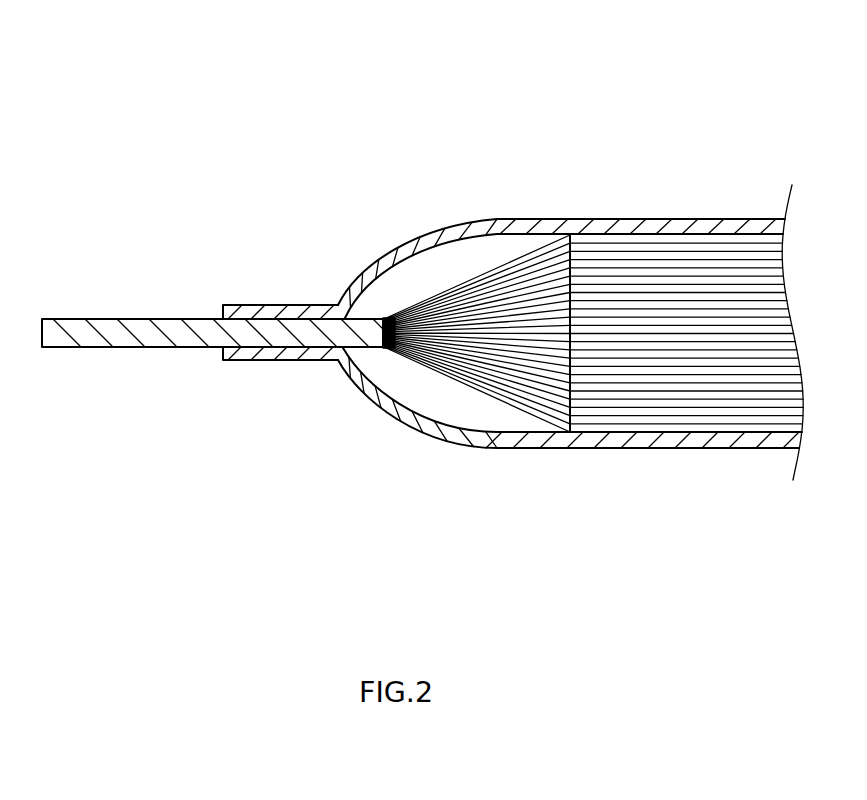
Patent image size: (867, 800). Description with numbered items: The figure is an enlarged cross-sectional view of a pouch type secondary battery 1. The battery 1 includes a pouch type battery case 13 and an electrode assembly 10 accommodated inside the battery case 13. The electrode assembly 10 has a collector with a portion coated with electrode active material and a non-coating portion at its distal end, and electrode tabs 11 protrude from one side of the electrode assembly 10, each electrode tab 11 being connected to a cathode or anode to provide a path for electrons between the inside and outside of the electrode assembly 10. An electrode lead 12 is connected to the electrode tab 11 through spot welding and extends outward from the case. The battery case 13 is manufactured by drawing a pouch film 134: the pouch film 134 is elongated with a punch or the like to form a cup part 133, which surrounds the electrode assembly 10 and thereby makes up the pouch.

The pouch type secondary battery 1 is at (586, 88).
The electrode assembly 10 is at (671, 424).
The electrode tab 11 is at (503, 268).
The electrode lead 12 is at (125, 340).
The battery case 13 is at (661, 226).
The cup part 133 is at (432, 440).
The pouch film 134 is at (283, 355).